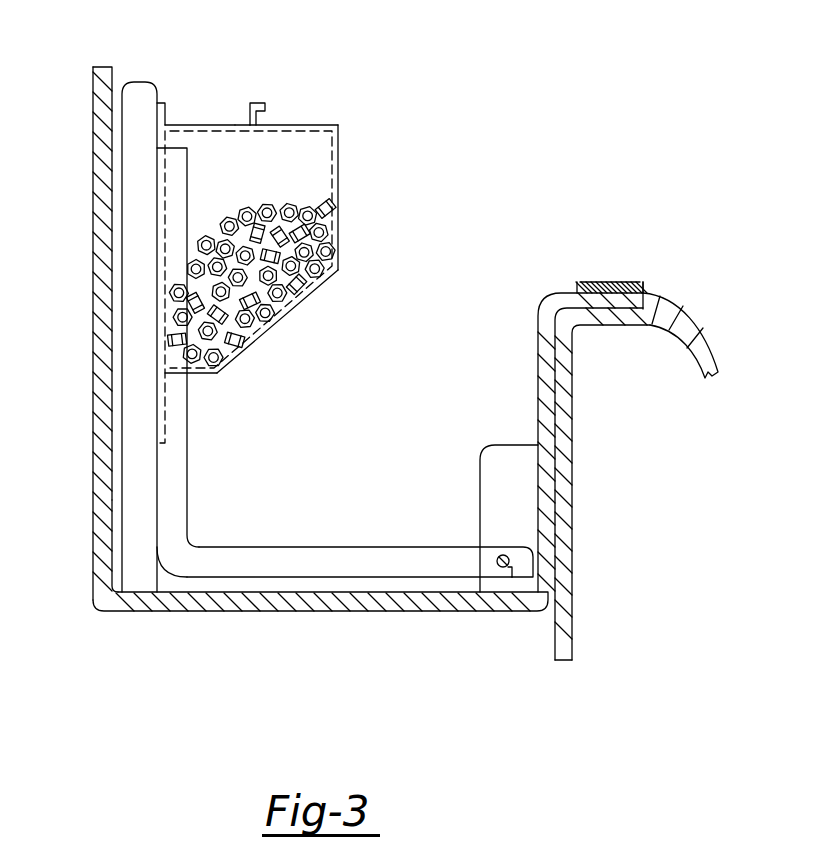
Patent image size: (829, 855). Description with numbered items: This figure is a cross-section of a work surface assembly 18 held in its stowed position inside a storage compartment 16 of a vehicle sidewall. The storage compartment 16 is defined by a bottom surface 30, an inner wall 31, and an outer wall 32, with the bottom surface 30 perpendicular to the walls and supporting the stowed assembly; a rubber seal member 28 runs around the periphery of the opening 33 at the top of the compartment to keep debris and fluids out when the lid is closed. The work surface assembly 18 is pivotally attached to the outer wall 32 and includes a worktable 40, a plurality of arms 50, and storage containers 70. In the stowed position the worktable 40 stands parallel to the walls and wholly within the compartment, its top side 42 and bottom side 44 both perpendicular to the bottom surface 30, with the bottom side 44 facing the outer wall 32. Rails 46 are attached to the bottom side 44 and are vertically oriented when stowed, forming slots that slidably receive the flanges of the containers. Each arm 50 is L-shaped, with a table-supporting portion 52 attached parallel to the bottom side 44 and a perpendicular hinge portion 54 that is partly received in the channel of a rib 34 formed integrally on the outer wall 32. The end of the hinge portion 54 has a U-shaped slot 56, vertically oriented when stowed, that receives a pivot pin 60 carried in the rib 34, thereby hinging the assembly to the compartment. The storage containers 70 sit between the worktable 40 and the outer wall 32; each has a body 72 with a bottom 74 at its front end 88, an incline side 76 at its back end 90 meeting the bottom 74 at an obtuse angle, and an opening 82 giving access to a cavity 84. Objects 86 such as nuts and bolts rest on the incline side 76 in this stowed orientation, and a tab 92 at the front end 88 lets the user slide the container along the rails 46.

The storage compartment 16 is at (562, 129).
The work surface assembly 18 is at (402, 128).
The rubber seal member 28 is at (615, 282).
The bottom surface 30 is at (305, 585).
The inner wall 31 is at (112, 506).
The outer wall 32 is at (538, 372).
The opening 33 is at (488, 238).
The rib 34 is at (522, 443).
The worktable 40 is at (145, 78).
The top side 42 is at (125, 115).
The bottom side 44 is at (158, 95).
The rail 46 is at (165, 117).
The arm 50 is at (243, 468).
The table-supporting portion 52 is at (190, 483).
The hinge portion 54 is at (392, 545).
The U-shaped slot 56 is at (497, 575).
The pivot pin 60 is at (500, 555).
The storage container 70 is at (365, 228).
The body 72 is at (340, 292).
The bottom 74 is at (338, 142).
The incline side 76 is at (249, 352).
The opening 82 is at (243, 128).
The cavity 84 is at (177, 133).
The objects 86 is at (333, 225).
The front end 88 is at (330, 126).
The back end 90 is at (268, 338).
The tab 92 is at (262, 112).